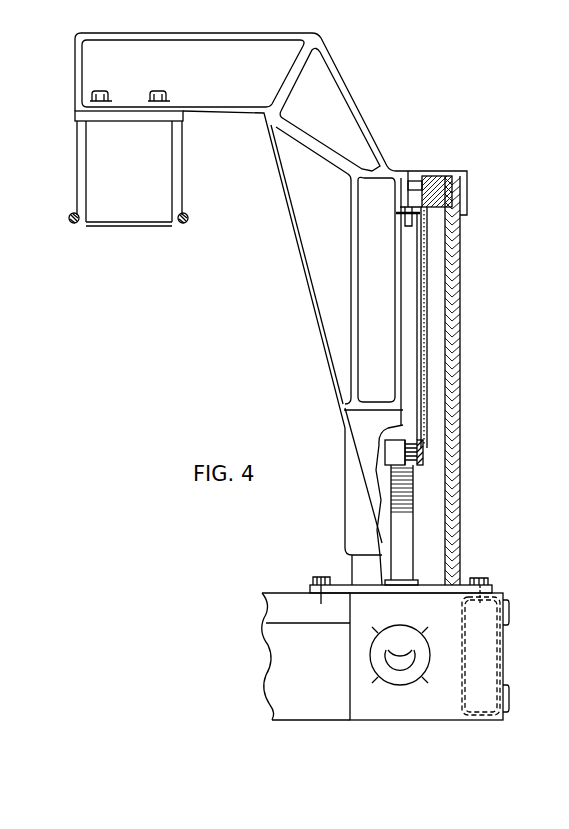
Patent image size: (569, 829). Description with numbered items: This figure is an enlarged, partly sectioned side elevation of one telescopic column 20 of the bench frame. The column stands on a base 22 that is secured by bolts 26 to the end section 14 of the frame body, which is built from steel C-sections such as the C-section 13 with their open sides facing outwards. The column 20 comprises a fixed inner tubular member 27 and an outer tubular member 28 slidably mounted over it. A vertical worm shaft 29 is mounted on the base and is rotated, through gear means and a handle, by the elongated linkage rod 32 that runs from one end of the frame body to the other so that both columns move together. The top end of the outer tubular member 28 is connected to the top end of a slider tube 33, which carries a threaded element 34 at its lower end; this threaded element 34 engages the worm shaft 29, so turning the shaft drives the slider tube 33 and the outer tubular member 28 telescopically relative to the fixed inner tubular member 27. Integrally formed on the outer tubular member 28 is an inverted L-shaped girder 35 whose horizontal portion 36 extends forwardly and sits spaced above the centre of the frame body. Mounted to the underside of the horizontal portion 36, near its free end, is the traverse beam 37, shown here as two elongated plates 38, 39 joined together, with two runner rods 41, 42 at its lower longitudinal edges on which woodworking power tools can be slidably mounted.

The C-section 13 is at (510, 702).
The end section 14 is at (285, 695).
The telescopic column 20 is at (457, 378).
The base 22 is at (491, 591).
The bolts 26 is at (318, 575).
The inner tubular member 27 is at (452, 564).
The outer tubular member 28 is at (461, 487).
The vertical worm shaft 29 is at (404, 540).
The linkage rod 32 is at (392, 672).
The slider tube 33 is at (427, 277).
The threaded element 34 is at (423, 452).
The inverted L-shaped girder 35 is at (312, 326).
The horizontal portion 36 is at (100, 38).
The traverse beam 37 is at (152, 236).
The elongated plate 38 is at (178, 148).
The elongated plate 39 is at (84, 161).
The runner rod 41 is at (186, 222).
The runner rod 42 is at (71, 222).